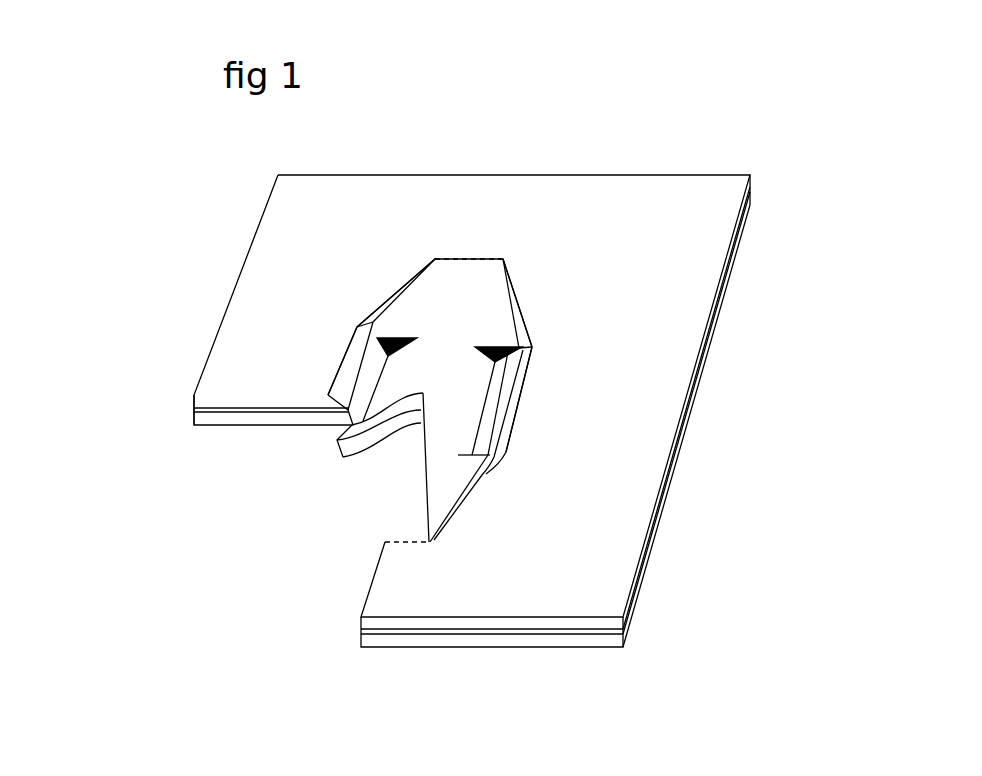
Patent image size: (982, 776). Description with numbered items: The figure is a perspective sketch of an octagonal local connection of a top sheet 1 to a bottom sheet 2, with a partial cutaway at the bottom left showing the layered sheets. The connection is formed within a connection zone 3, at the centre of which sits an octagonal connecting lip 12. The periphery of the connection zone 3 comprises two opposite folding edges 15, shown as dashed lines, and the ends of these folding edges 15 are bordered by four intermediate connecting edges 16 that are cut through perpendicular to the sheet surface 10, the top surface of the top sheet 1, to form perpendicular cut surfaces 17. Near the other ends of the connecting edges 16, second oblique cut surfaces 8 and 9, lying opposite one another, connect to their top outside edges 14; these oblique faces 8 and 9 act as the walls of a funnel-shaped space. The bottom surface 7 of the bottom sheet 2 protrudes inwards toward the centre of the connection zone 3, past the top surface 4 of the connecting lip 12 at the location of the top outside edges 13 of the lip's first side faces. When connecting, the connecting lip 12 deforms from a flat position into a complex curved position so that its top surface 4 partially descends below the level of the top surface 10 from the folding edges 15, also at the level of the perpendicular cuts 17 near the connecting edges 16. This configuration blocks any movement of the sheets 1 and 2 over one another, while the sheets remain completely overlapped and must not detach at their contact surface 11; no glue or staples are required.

The top sheet 1 is at (727, 200).
The bottom sheet 2 is at (747, 228).
The connection zone 3 is at (437, 362).
The top surface of connecting lip 4 is at (385, 397).
The bottom surface of bottom sheet 7 is at (565, 647).
The second oblique cut surface 8 is at (363, 377).
The second oblique cut surface 9 is at (495, 423).
The sheet surface 10 is at (613, 244).
The contact surface 11 is at (232, 412).
The connecting lip 12 is at (363, 445).
The top outside edge of first side face 13 is at (333, 435).
The top outside edge 14 is at (352, 348).
The folding edge 15 is at (481, 259).
The intermediate connecting edge 16 is at (398, 293).
The perpendicular cut surface 17 is at (378, 322).